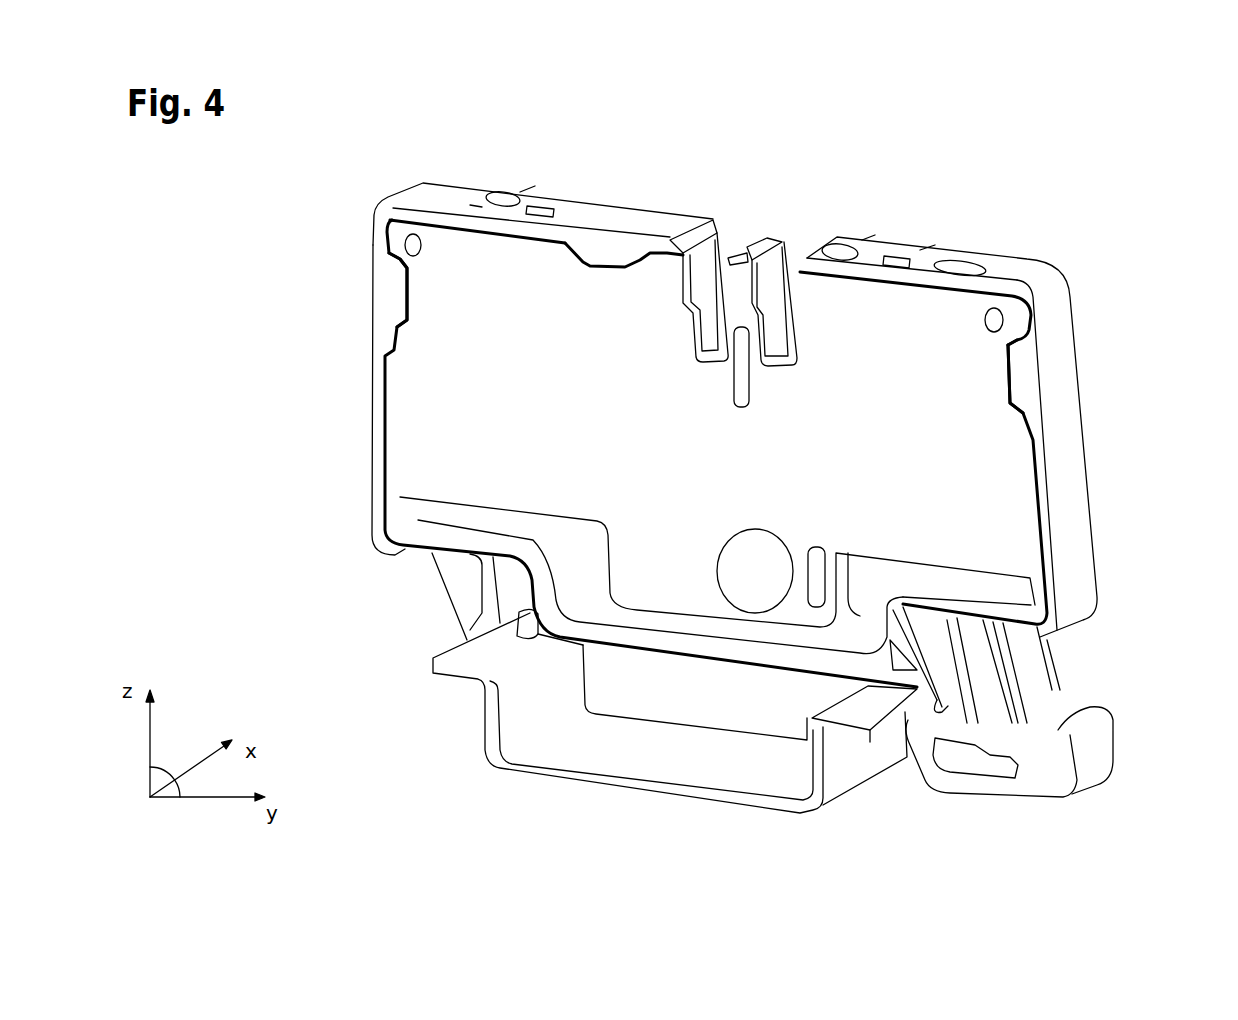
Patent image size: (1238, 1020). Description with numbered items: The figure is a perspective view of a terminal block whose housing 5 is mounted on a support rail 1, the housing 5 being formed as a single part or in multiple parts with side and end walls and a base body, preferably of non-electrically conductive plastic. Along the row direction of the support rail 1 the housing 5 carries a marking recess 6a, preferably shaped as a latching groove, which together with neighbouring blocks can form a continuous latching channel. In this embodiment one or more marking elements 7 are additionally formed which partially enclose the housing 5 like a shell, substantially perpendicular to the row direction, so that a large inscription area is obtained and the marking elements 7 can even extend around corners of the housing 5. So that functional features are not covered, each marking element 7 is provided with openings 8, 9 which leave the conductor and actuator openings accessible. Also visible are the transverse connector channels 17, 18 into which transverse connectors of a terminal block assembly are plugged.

The support rail 1 is at (837, 770).
The housing 5 is at (1015, 548).
The marking recess 6a is at (625, 250).
The marking element 7 is at (378, 445).
The opening 8 is at (557, 202).
The opening 9 is at (494, 187).
The transverse connector channel 17 is at (738, 230).
The transverse connector channel 18 is at (802, 243).